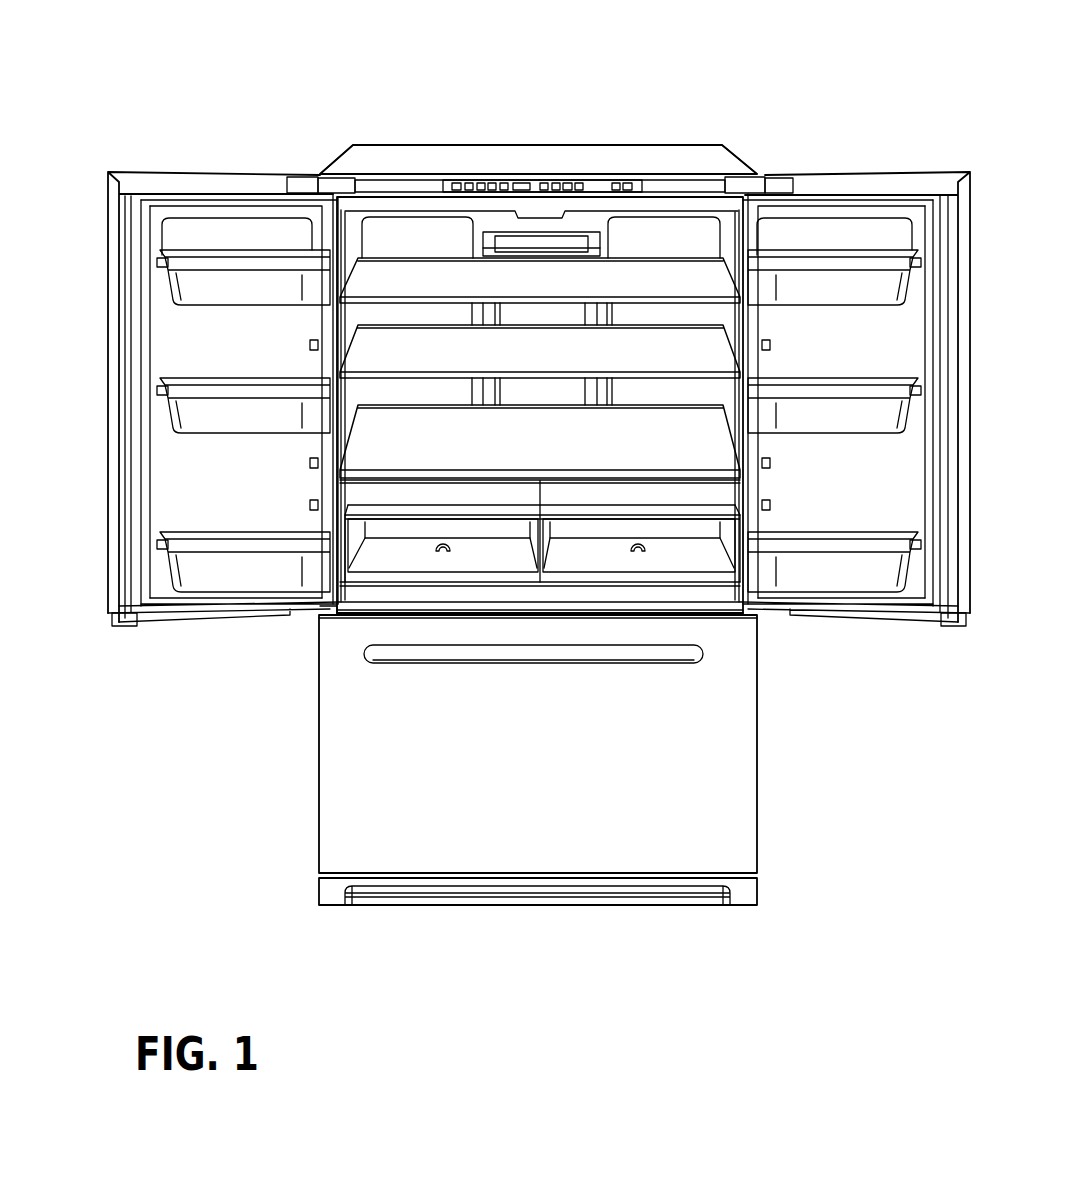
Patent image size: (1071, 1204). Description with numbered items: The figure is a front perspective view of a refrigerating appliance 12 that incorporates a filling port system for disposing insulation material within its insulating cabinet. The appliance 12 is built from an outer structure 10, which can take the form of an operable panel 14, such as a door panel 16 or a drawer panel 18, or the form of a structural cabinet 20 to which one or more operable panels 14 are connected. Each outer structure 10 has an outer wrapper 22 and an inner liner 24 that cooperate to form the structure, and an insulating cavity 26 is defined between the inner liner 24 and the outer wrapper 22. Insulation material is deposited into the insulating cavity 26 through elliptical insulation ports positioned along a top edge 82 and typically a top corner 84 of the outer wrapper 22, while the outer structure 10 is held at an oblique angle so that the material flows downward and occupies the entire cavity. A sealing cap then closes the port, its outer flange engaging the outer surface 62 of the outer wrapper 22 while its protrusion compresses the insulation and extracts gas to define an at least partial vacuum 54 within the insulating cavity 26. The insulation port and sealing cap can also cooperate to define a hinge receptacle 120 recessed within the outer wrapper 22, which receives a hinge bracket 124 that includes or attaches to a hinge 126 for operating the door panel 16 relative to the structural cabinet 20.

The outer structure 10 is at (466, 134).
The appliance 12 is at (637, 98).
The operable panel 14 is at (308, 702).
The door panel 16 is at (118, 506).
The drawer panel 18 is at (722, 758).
The structural cabinet 20 is at (764, 136).
The outer wrapper 22 is at (600, 160).
The inner liner 24 is at (346, 320).
The insulating cavity 26 is at (383, 172).
The partial vacuum 54 is at (675, 158).
The outer surface 62 is at (532, 165).
The top edge 82 is at (418, 146).
The top corner 84 is at (725, 148).
The hinge receptacle 120 is at (328, 161).
The hinge bracket 124 is at (760, 169).
The hinge 126 is at (775, 207).